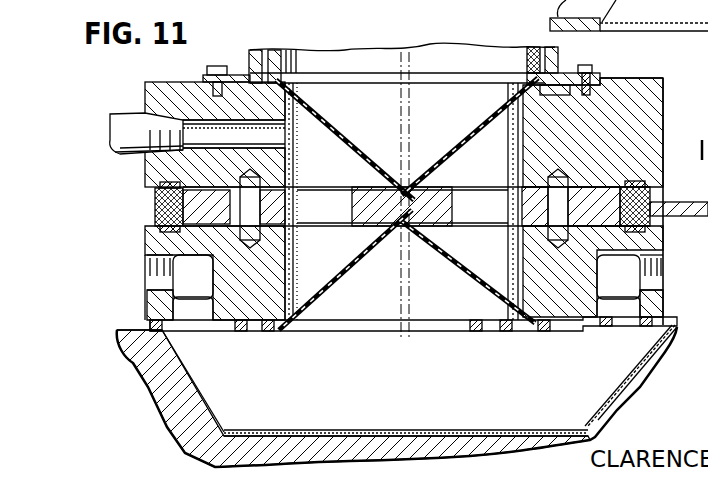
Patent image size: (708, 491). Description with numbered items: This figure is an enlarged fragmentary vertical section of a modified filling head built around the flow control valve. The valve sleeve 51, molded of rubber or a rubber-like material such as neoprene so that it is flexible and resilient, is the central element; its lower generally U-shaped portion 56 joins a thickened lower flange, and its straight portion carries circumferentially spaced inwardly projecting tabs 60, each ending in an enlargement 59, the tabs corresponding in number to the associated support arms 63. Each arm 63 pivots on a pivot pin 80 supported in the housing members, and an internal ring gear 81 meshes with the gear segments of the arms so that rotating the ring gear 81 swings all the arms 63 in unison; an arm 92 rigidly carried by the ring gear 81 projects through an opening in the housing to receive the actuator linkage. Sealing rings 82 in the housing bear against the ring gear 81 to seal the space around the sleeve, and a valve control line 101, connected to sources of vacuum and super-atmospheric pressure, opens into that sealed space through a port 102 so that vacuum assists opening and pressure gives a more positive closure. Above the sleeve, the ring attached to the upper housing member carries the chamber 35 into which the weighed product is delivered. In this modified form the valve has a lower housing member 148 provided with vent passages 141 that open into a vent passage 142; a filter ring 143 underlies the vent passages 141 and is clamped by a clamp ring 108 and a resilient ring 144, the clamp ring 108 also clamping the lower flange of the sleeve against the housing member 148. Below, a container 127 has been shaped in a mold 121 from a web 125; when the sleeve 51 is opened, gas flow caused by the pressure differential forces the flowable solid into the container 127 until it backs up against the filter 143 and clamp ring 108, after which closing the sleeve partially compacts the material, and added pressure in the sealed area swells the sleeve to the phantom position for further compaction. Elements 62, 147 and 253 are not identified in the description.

The lower U-shaped portion 56 is at (332, 3).
The bracket 62 is at (630, 1).
The chamber 35 is at (563, 61).
The housing 147 is at (670, 127).
The port 102 is at (282, 130).
The tab 60 is at (392, 167).
The pivot pin 80 is at (566, 166).
The valve sleeve 51 is at (462, 156).
The arm 63 is at (312, 208).
The valve control line 101 is at (110, 158).
The sealing ring 82 is at (150, 184).
The internal ring gear 81 is at (165, 211).
The web 125 is at (120, 330).
The arm 92 is at (677, 203).
The lower housing member 148 is at (650, 241).
The vent passage 141 is at (597, 257).
The resilient ring 144 is at (668, 312).
The enlargement 59 is at (412, 250).
The filter ring 143 is at (189, 324).
The clamp ring 108 is at (562, 333).
The vent passage 142 is at (601, 326).
The base wall 253 is at (700, 408).
The container 127 is at (226, 402).
The mold 121 is at (163, 413).